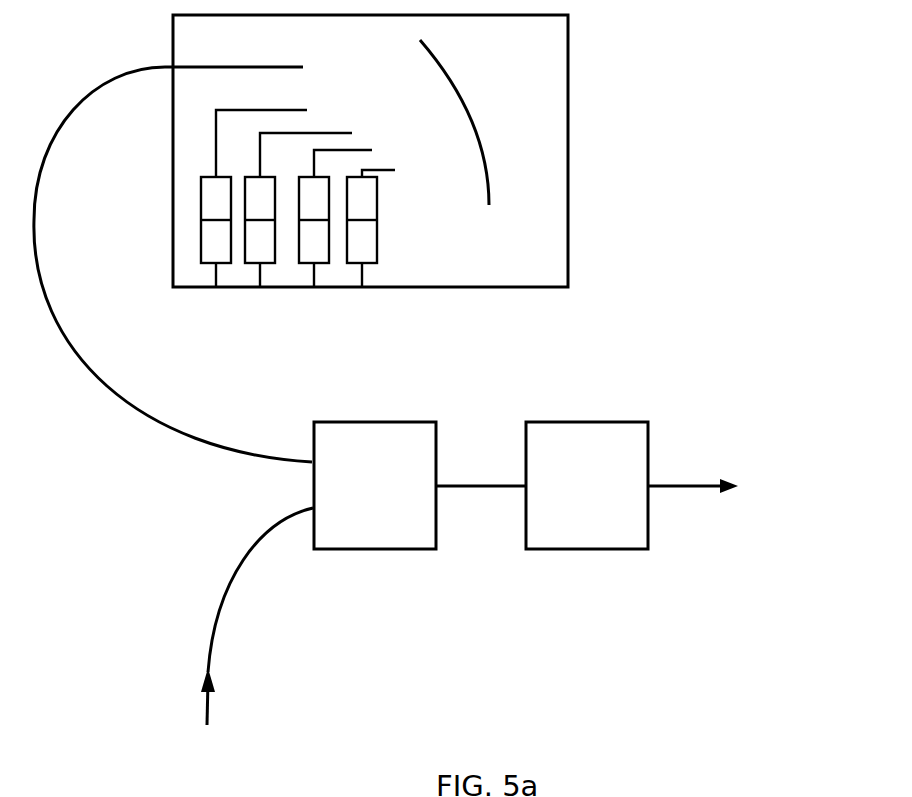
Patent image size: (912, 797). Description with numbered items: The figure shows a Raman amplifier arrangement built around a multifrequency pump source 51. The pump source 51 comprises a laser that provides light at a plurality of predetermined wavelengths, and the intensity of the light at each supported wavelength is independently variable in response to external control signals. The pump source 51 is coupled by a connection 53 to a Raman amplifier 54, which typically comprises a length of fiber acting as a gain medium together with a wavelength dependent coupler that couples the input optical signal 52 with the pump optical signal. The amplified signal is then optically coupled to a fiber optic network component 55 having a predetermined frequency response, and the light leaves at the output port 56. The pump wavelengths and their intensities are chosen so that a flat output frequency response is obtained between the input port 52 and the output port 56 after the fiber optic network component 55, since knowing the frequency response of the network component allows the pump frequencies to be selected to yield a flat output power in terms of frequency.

The multifrequency pump source 51 is at (568, 80).
The input optical signal 52 is at (225, 613).
The optical connection from light source to combiner 53 is at (133, 400).
The Raman amplifier 54 is at (373, 422).
The fiber optic network component 55 is at (592, 422).
The output port 56 is at (683, 486).